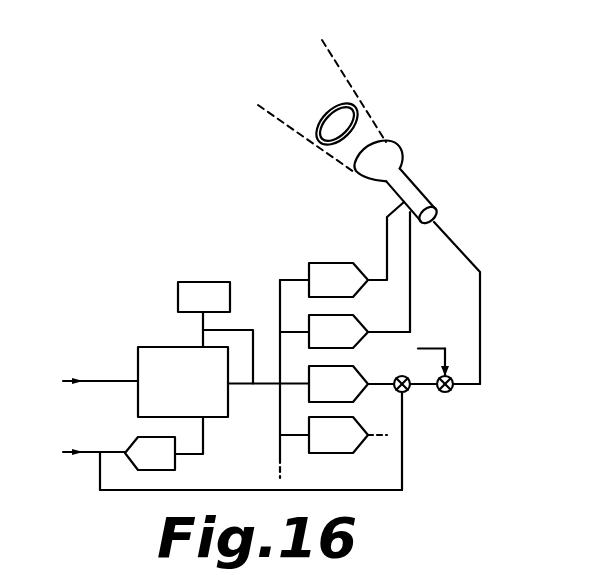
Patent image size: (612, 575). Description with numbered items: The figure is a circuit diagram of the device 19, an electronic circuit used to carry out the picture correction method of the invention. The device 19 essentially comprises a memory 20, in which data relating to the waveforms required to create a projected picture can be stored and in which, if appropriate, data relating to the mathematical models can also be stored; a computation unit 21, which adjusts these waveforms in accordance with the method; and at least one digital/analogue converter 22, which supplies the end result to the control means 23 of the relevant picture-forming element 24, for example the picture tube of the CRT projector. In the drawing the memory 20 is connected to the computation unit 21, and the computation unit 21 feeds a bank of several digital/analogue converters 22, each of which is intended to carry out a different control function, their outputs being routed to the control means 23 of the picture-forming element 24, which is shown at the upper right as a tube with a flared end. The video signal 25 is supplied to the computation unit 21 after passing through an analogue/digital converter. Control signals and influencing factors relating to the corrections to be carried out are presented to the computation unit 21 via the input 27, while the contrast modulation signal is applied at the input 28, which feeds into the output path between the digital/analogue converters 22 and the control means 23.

The device 19 is at (90, 228).
The memory 20 is at (195, 287).
The computation unit 21 is at (153, 353).
The digital/analogue converter 22 is at (313, 323).
The control means 23 is at (443, 188).
The picture-forming element 24 is at (390, 157).
The video signal 25 is at (92, 460).
The input 27 is at (102, 380).
The input 28 is at (445, 348).